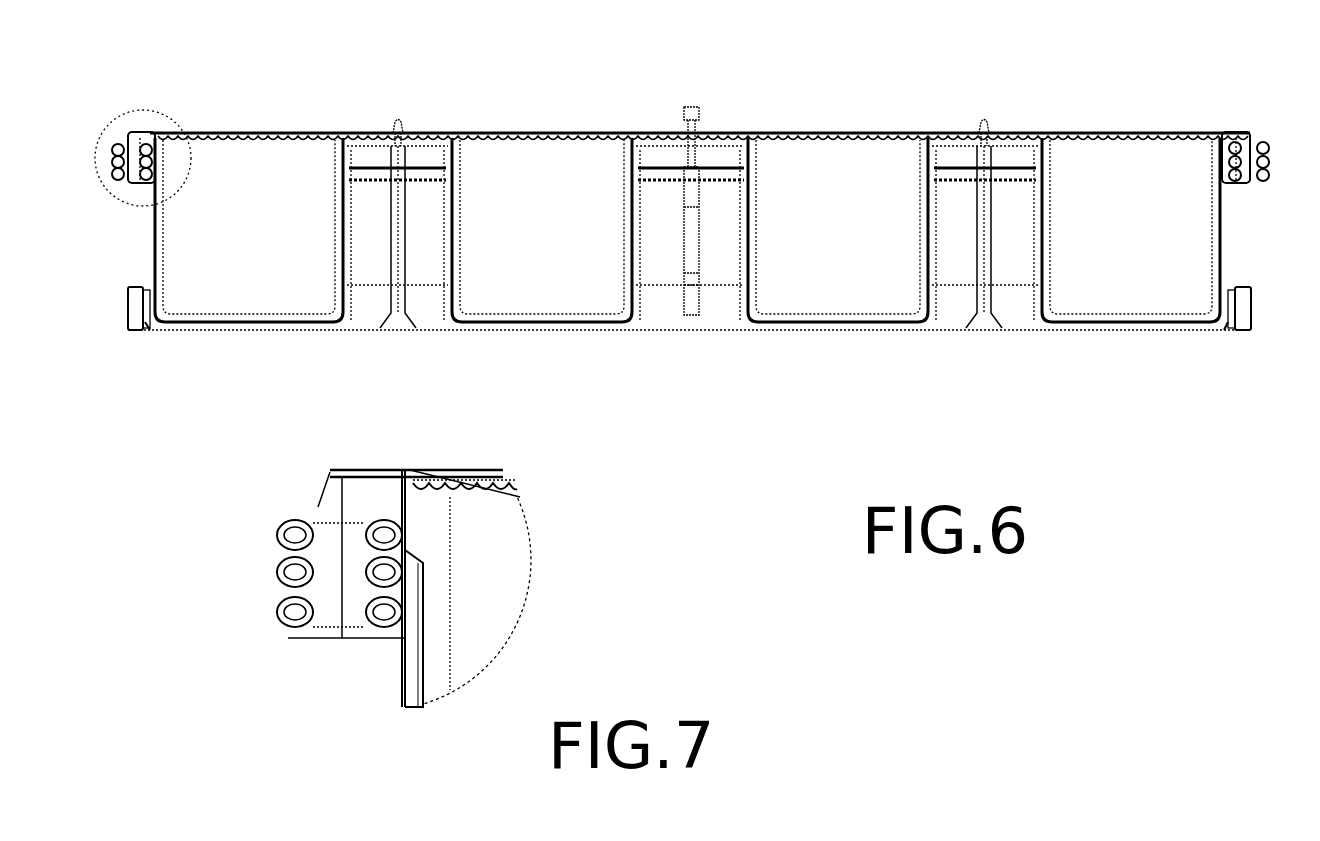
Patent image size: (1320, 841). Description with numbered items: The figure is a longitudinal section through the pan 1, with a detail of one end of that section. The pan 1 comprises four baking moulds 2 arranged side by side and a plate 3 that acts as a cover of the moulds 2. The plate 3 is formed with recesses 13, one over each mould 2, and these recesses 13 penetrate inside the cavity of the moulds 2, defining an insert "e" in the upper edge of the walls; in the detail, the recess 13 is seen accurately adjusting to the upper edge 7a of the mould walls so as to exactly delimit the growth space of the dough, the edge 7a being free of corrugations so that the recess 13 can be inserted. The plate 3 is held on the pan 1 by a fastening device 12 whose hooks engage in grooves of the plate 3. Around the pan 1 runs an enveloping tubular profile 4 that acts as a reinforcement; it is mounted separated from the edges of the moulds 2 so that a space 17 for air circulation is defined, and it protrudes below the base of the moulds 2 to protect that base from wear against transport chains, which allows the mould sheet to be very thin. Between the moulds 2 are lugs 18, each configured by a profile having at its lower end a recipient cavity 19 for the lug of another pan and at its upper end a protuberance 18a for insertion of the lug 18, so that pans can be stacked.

In FIG. 6, the pan 1 is at (1110, 95).
In FIG. 6, the baking mould 2 is at (255, 297).
In FIG. 6, the plate 3 is at (127, 137).
In FIG. 7, the plate 3 is at (325, 497).
In FIG. 6, the enveloping tubular profile 4 is at (128, 315).
In FIG. 7, the upper edge of the walls 7a is at (400, 495).
In FIG. 6, the fastening device 12 is at (702, 98).
In FIG. 6, the recess 13 is at (255, 130).
In FIG. 7, the recess 13 is at (492, 483).
In FIG. 6, the space 17 is at (147, 328).
In FIG. 6, the lug 18 is at (998, 203).
In FIG. 6, the protuberance 18a is at (397, 130).
In FIG. 6, the recipient cavity 19 is at (398, 332).
In FIG. 7, the insert e is at (432, 510).